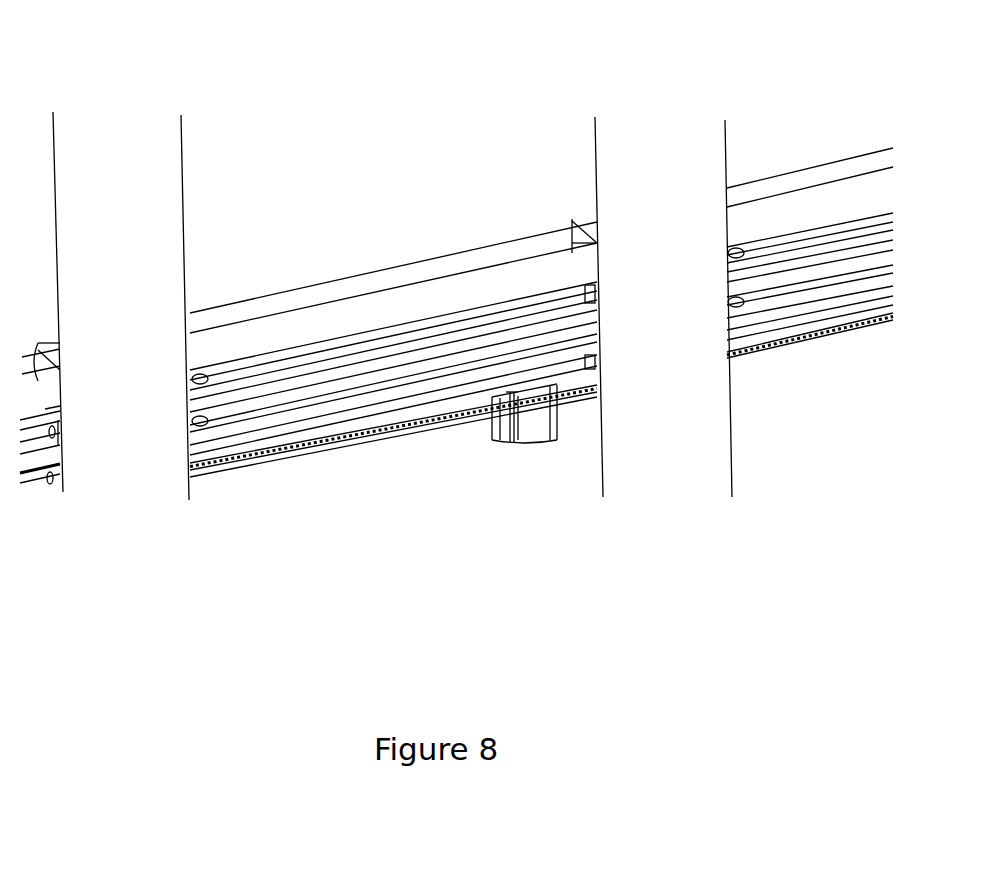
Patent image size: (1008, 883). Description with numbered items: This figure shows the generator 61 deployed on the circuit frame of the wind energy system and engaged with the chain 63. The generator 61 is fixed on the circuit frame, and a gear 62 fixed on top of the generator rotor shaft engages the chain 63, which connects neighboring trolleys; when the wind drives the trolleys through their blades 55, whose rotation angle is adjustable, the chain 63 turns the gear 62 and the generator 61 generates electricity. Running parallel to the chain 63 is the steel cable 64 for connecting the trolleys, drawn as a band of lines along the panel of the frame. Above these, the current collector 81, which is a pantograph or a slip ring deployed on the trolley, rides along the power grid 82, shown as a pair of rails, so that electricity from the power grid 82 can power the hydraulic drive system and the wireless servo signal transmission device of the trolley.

The blade 55 is at (690, 157).
The generator 61 is at (538, 430).
The gear 62 is at (512, 402).
The chain 63 is at (457, 418).
The steel cable 64 is at (296, 408).
The current collector 81 is at (572, 220).
The power grid 82 is at (302, 307).